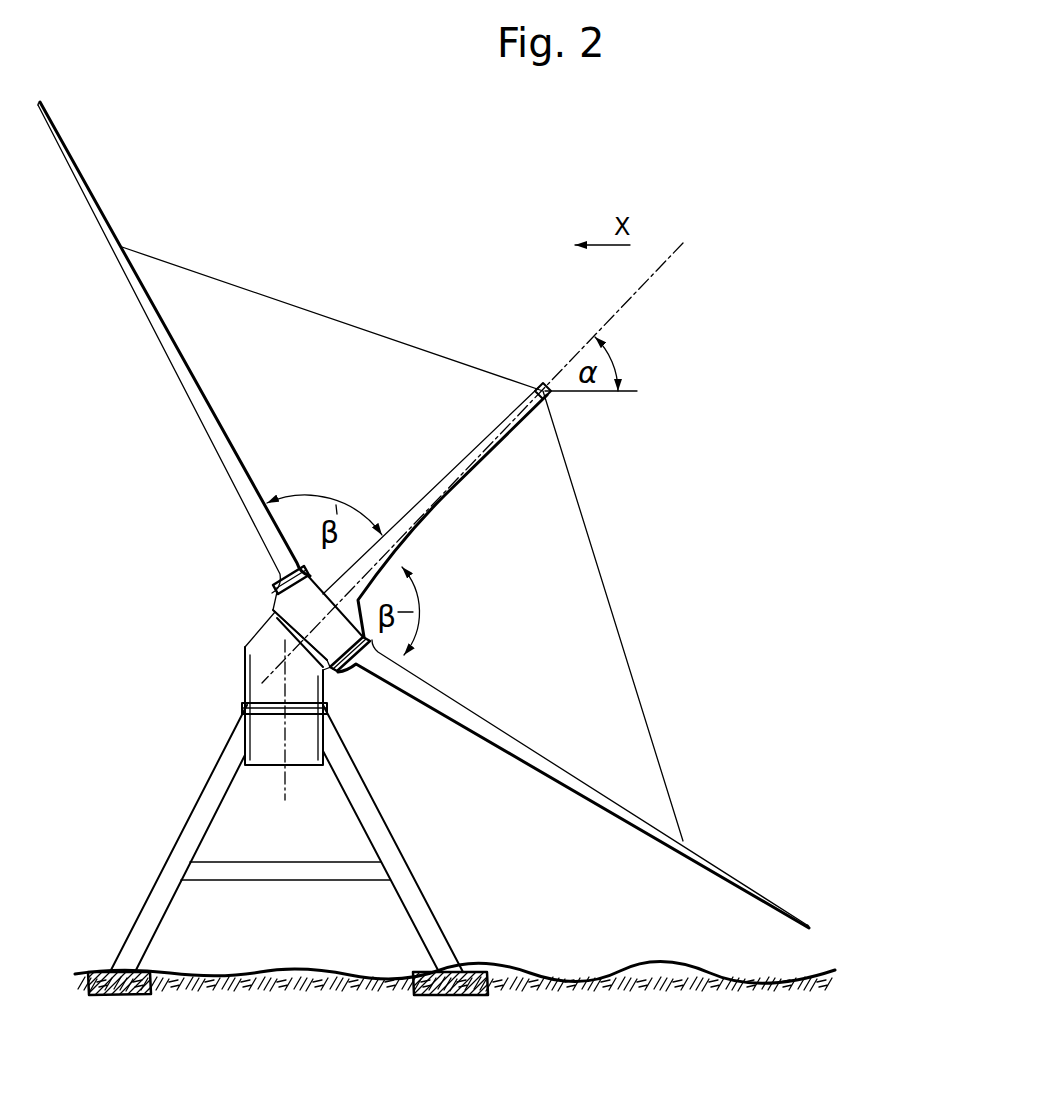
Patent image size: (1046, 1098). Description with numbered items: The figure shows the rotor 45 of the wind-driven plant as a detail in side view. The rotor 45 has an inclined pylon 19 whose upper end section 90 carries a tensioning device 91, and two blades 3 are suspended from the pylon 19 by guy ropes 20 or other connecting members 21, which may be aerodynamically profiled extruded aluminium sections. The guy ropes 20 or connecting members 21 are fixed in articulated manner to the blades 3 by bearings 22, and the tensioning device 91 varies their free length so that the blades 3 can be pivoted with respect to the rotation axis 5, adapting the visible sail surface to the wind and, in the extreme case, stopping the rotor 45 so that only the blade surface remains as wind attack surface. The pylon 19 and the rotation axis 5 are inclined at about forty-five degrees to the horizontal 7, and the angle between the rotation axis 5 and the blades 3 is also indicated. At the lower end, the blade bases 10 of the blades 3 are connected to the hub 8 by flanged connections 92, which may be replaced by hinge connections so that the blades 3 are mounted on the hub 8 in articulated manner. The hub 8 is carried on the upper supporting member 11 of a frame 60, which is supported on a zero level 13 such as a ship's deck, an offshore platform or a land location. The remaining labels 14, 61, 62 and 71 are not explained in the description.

The blades 3 is at (228, 480).
The rotation axis 5 is at (608, 318).
The horizontal 7 is at (602, 393).
The hub 8 is at (226, 665).
The blade bases 10 is at (258, 547).
The upper supporting member 11 is at (228, 713).
The zero level 13 is at (553, 970).
The tension cable 14 is at (408, 544).
The pylon 19 is at (457, 466).
The guy ropes 20 is at (535, 364).
The connecting members 21 is at (292, 303).
The bearings 22 is at (122, 246).
The rotor 45 is at (327, 227).
The frame 60 is at (188, 822).
The left arm tip 61 is at (56, 101).
The right arm tip 62 is at (805, 906).
The vertical axis 71 is at (285, 795).
The upper end section 90 is at (540, 417).
The tensioning device 91 is at (531, 396).
The flanged connections 92 is at (276, 596).